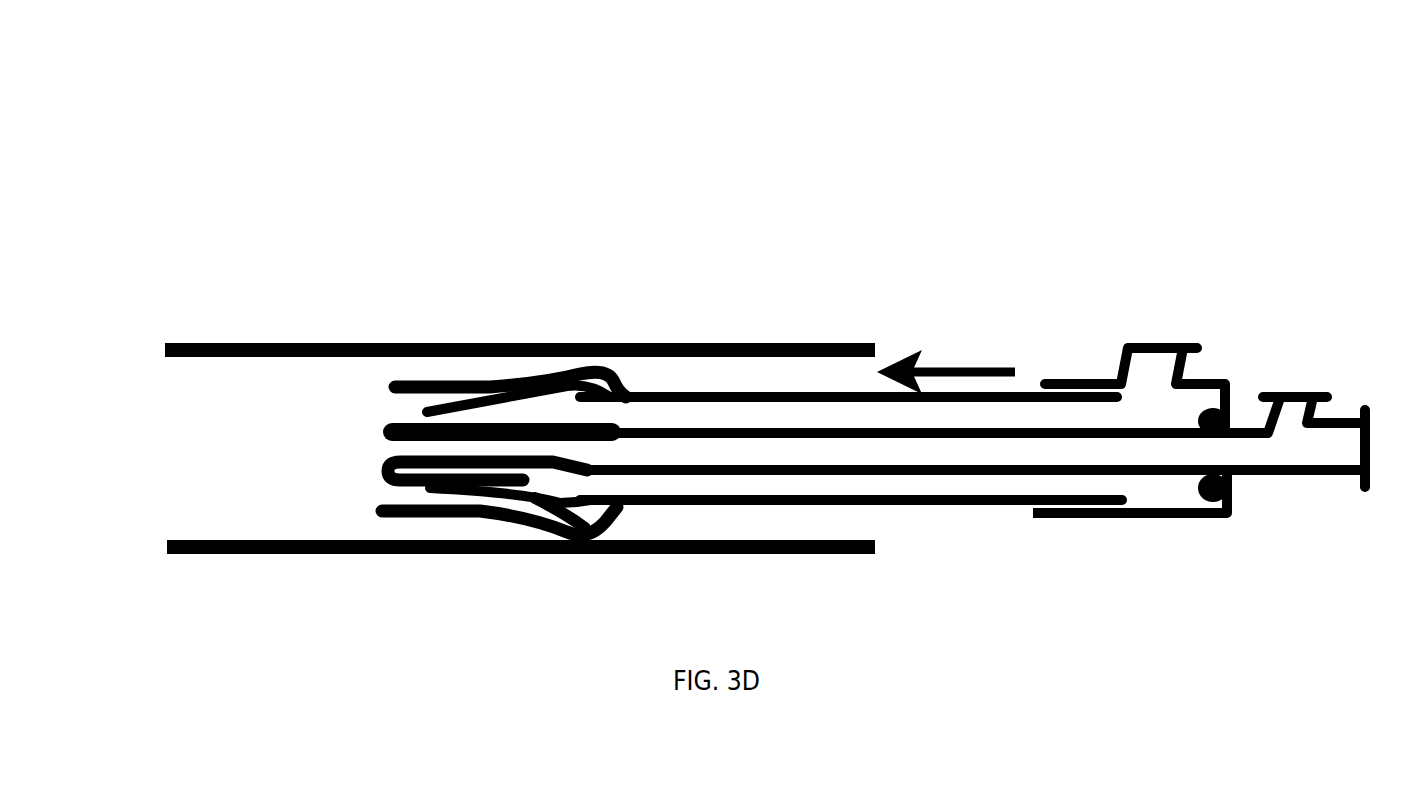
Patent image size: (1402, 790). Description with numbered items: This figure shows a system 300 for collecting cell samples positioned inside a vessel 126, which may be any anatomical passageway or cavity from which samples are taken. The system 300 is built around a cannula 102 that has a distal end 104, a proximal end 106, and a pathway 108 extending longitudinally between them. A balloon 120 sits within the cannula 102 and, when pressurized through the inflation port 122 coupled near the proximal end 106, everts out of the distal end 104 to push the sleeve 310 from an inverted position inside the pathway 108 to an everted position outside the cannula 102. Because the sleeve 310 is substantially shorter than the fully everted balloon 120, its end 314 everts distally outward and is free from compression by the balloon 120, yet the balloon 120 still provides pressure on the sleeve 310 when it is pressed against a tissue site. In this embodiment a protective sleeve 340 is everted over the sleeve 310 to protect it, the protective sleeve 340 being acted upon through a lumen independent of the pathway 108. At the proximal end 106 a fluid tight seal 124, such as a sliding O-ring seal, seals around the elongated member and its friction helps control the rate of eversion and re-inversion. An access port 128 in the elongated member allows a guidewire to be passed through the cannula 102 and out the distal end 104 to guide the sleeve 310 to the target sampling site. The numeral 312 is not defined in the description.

The system 300 is at (162, 125).
The vessel 126 is at (290, 325).
The protective sleeve 340 is at (433, 372).
The stent strut 312 is at (497, 393).
The balloon 120 is at (552, 414).
The distal end 104 is at (606, 375).
The pathway 108 is at (1008, 412).
The inflation port 122 is at (1137, 343).
The fluid tight seal 124 is at (1208, 408).
The access port 128 is at (1282, 392).
The cannula 102 is at (1081, 527).
The proximal end 106 is at (1150, 518).
The end 314 is at (427, 490).
The sleeve 310 is at (529, 507).